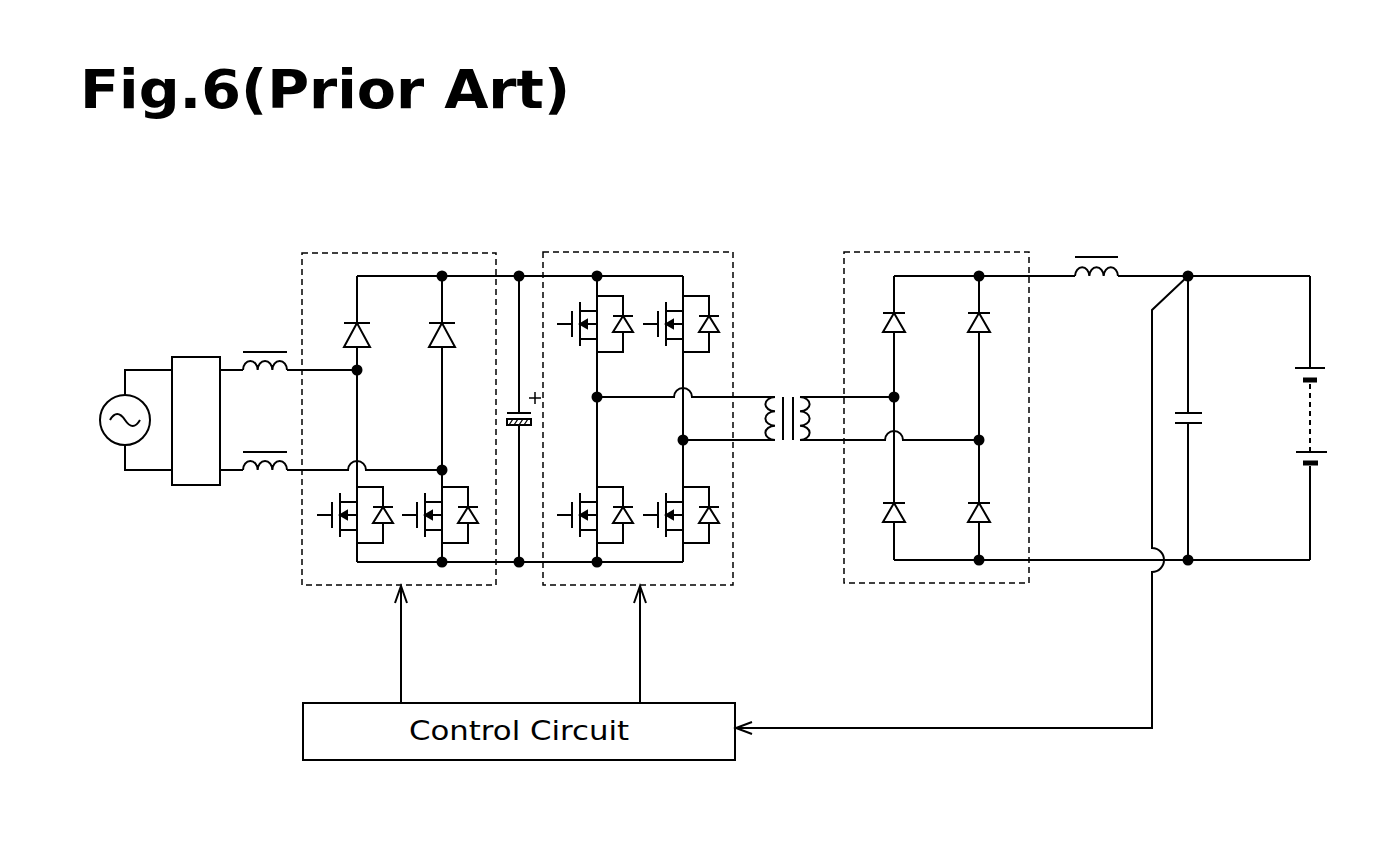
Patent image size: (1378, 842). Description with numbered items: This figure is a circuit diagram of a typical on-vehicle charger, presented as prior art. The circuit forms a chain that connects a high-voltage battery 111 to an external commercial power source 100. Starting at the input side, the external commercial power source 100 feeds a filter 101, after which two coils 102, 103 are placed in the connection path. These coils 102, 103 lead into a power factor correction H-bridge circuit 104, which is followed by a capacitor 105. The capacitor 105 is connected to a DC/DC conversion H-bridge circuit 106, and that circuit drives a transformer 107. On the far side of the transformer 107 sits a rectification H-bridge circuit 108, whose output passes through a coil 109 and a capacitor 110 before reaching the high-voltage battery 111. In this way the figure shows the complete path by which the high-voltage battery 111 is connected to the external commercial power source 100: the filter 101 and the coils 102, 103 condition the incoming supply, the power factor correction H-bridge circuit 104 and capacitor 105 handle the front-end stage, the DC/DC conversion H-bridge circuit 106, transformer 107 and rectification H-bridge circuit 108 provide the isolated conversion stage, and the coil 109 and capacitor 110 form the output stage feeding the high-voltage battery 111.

The external commercial power source 100 is at (120, 395).
The filter 101 is at (193, 357).
The coil 102 is at (265, 378).
The coil 103 is at (265, 478).
The power factor correction H-bridge circuit 104 is at (393, 252).
The capacitor 105 is at (508, 411).
The DC/DC conversion H-bridge circuit 106 is at (628, 252).
The transformer 107 is at (797, 377).
The rectification H-bridge circuit 108 is at (923, 252).
The coil 109 is at (1096, 284).
The capacitor 110 is at (1196, 410).
The high-voltage battery 111 is at (1314, 367).